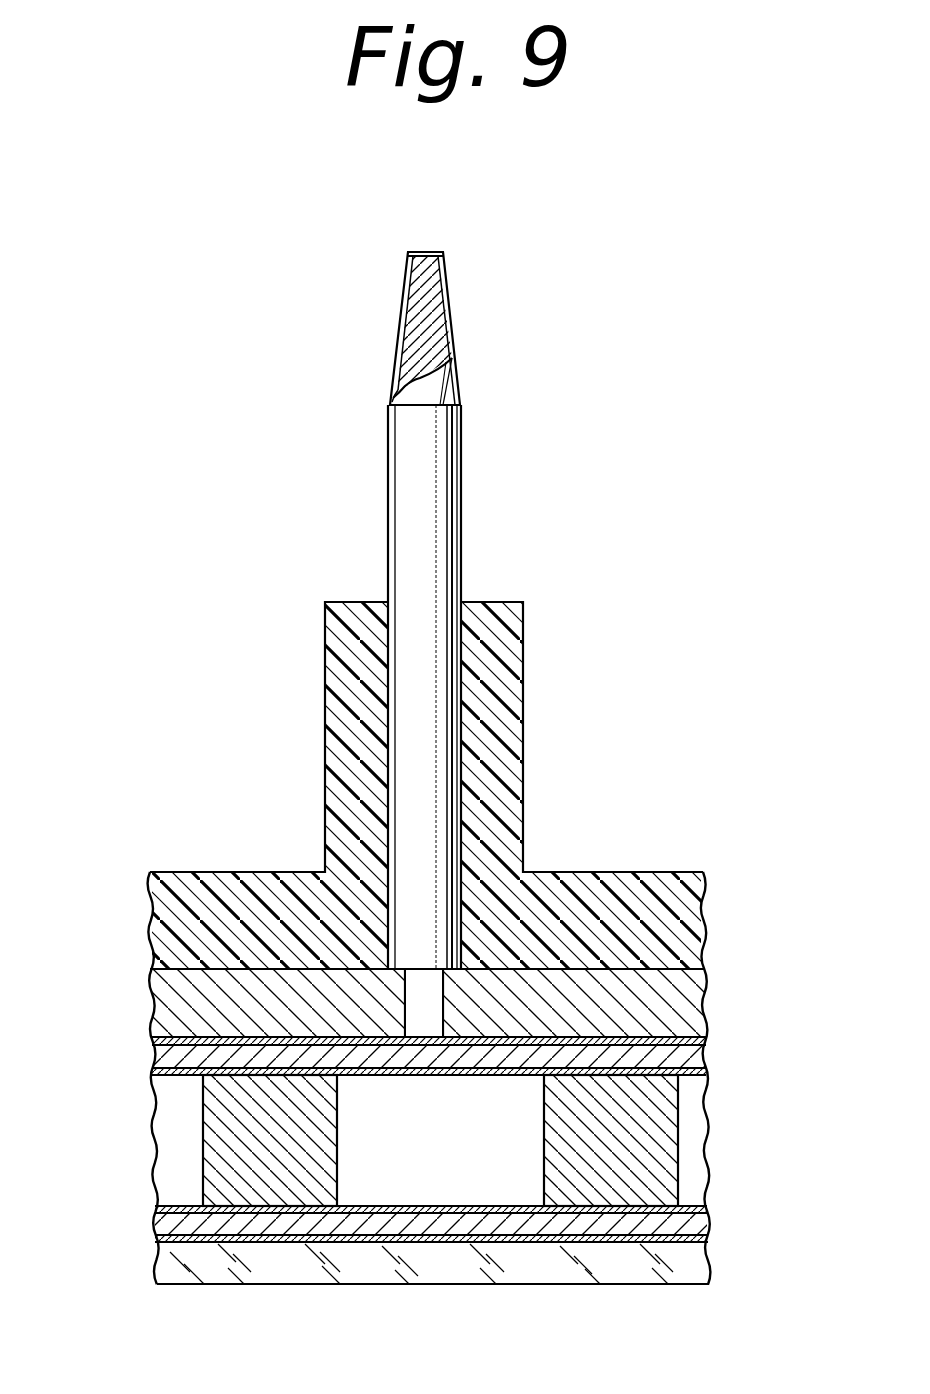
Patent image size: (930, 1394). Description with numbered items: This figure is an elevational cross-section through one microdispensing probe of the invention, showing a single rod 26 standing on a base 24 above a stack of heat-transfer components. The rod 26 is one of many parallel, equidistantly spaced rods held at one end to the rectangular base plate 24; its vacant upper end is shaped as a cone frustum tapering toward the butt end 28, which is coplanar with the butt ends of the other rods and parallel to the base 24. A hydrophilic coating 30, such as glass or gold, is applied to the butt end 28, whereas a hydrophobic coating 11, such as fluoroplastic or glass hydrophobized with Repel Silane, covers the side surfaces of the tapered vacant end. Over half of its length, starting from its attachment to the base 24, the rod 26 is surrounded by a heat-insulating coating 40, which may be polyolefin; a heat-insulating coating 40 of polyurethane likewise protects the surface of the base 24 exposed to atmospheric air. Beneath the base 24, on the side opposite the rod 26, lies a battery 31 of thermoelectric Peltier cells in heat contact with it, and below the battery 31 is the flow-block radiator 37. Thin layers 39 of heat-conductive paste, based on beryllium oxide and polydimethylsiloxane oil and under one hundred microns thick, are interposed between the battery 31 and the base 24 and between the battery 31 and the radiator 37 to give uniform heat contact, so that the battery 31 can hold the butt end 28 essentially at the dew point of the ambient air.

The hydrophobic coating 11 is at (402, 318).
The butt end 28 is at (404, 245).
The hydrophilic coating 30 is at (432, 249).
The rod 26 is at (463, 480).
The heat-insulating coating 40 is at (523, 741).
The base 24 is at (155, 1008).
The layer of heat-conductive paste 39 is at (706, 1040).
The battery of thermoelectric cells 31 is at (714, 1043).
The flow-block radiator 37 is at (712, 1262).